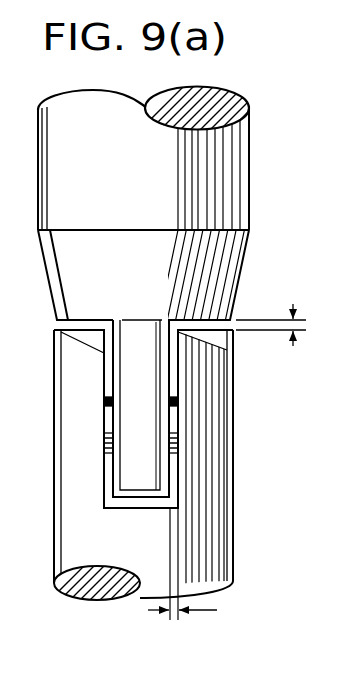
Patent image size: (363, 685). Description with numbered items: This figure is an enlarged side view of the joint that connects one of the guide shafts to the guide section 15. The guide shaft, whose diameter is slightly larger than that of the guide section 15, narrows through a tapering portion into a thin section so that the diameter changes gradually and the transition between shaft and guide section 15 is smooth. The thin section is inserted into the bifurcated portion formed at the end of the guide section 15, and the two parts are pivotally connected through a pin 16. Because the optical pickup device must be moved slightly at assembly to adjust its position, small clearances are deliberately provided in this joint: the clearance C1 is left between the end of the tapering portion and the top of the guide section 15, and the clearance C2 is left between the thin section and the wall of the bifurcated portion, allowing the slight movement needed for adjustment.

The pin 16 is at (176, 425).
The guide section 15 is at (207, 517).
The clearance C1 is at (283, 319).
The clearance C2 is at (182, 577).